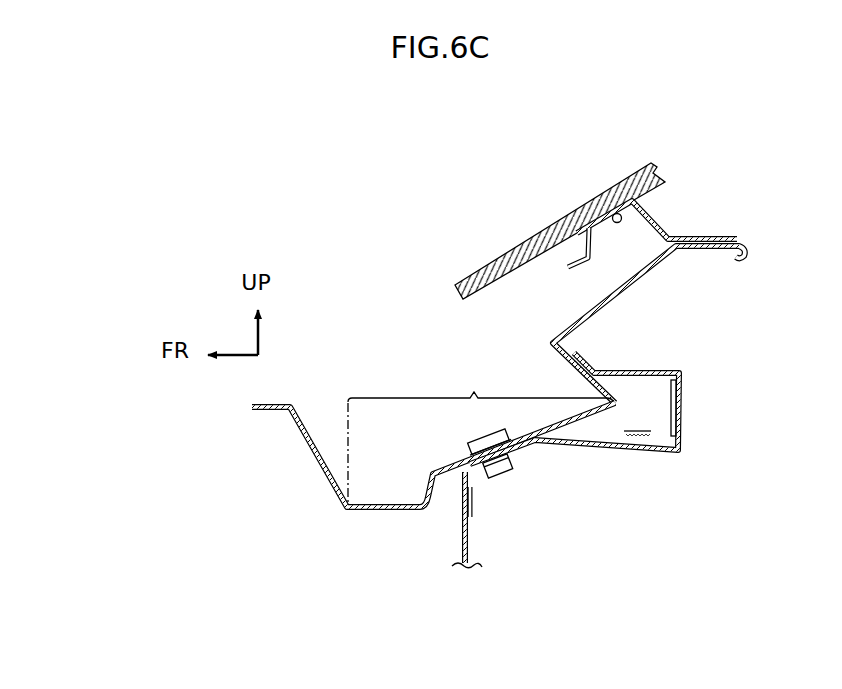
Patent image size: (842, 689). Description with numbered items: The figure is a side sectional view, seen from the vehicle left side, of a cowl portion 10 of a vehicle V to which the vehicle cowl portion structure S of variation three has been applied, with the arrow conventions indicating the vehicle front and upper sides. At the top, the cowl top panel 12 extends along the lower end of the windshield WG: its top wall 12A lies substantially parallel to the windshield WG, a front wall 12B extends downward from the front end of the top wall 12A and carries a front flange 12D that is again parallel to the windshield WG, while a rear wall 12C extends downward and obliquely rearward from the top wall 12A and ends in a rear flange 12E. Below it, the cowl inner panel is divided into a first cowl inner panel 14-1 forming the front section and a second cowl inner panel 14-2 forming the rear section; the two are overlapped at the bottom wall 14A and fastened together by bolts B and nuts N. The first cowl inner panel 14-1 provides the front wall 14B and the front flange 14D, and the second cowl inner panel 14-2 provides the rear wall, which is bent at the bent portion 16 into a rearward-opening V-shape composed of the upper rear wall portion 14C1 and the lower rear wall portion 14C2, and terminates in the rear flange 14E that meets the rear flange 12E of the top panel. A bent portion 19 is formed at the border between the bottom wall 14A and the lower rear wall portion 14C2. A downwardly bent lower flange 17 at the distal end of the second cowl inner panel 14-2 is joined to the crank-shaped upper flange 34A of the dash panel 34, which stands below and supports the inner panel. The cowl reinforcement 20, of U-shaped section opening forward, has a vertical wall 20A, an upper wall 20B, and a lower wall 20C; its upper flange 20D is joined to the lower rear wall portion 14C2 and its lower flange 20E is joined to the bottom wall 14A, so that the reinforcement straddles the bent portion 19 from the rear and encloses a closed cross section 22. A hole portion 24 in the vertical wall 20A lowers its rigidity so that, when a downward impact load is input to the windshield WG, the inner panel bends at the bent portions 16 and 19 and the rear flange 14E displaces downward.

The cowl portion 10 is at (389, 322).
The vehicle cowl portion structure S is at (379, 366).
The vehicle V is at (453, 258).
The windshield WG is at (633, 178).
The cowl top panel 12 is at (660, 217).
The top wall 12A is at (607, 199).
The front wall 12B is at (584, 229).
The rear wall 12C is at (650, 202).
The front flange 12D is at (578, 258).
The rear flange 12E is at (703, 236).
The first cowl inner panel 14-1 is at (311, 450).
The second cowl inner panel 14-2 is at (644, 283).
The bottom wall 14A is at (480, 385).
The front wall 14B is at (306, 405).
The upper rear wall portion 14C1 is at (658, 262).
The lower rear wall portion 14C2 is at (558, 371).
The front flange 14D is at (266, 412).
The rear flange 14E is at (742, 252).
The bent portion 16 is at (549, 344).
The lower flange 17 is at (461, 498).
The bent portion 19 is at (628, 405).
The cowl reinforcement 20 is at (679, 454).
The vertical wall 20A is at (684, 447).
The upper wall 20B is at (655, 372).
The lower wall 20C is at (625, 450).
The upper flange 20D is at (587, 356).
The lower flange 20E is at (547, 444).
The closed cross section 22 is at (637, 422).
The hole portion 24 is at (683, 399).
The dash panel 34 is at (461, 543).
The upper flange 34A is at (473, 512).
The bolt B is at (484, 440).
The nut N is at (503, 480).